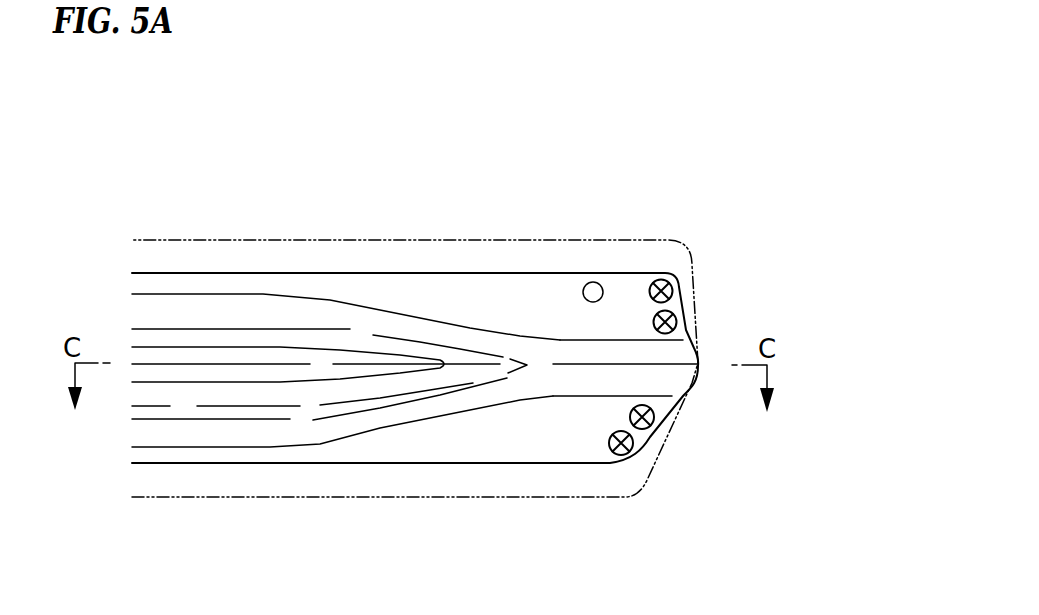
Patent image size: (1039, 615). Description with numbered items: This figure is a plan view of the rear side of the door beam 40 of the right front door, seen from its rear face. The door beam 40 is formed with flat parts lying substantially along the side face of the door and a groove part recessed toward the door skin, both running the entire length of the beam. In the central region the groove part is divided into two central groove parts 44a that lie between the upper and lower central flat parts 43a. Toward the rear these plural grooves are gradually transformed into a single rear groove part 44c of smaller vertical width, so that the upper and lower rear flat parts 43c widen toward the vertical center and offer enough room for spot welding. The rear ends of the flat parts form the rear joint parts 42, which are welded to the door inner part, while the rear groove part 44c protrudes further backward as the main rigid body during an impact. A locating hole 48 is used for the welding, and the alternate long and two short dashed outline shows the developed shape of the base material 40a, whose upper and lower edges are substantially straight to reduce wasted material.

The door beam 40 is at (355, 262).
The base material 40a is at (430, 228).
The rear joint parts 42 is at (672, 276).
The central flat parts 43a is at (203, 288).
The rear flat parts 43c is at (625, 290).
The central groove parts 44a is at (257, 317).
The rear groove part 44c is at (563, 355).
The locating hole 48 is at (593, 282).